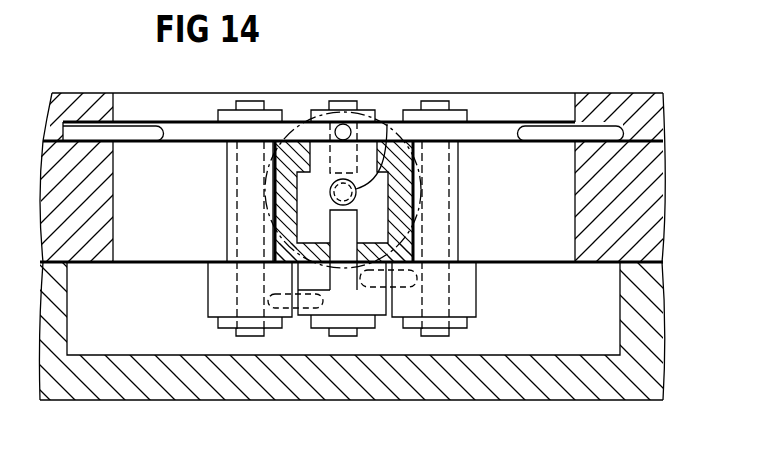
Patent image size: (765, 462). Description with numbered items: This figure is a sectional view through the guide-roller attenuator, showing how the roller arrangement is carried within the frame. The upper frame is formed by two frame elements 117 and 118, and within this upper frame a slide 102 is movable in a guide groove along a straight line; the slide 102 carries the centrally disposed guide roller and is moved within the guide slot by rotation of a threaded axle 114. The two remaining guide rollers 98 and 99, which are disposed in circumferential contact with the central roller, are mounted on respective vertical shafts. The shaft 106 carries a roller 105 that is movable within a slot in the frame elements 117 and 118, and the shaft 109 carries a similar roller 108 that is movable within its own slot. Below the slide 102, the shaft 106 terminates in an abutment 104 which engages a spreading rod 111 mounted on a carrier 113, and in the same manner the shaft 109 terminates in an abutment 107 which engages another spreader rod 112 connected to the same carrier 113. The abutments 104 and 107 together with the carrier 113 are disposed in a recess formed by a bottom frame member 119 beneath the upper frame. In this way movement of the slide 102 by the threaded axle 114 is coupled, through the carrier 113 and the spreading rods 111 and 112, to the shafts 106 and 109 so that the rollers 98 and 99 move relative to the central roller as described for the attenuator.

The guide roller 98 is at (196, 130).
The guide roller 99 is at (498, 132).
The slide 102 is at (290, 158).
The abutment 104 is at (219, 272).
The roller 105 is at (232, 190).
The vertical shaft 106 is at (265, 93).
The abutment 107 is at (467, 272).
The roller 108 is at (455, 191).
The shaft 109 is at (440, 103).
The spreading rod 111 is at (300, 318).
The spreader rod 112 is at (395, 290).
The carrier 113 is at (378, 316).
The threaded axle 114 is at (387, 124).
The upper frame element 117 is at (78, 95).
The upper frame element 118 is at (97, 163).
The bottom frame member 119 is at (90, 385).